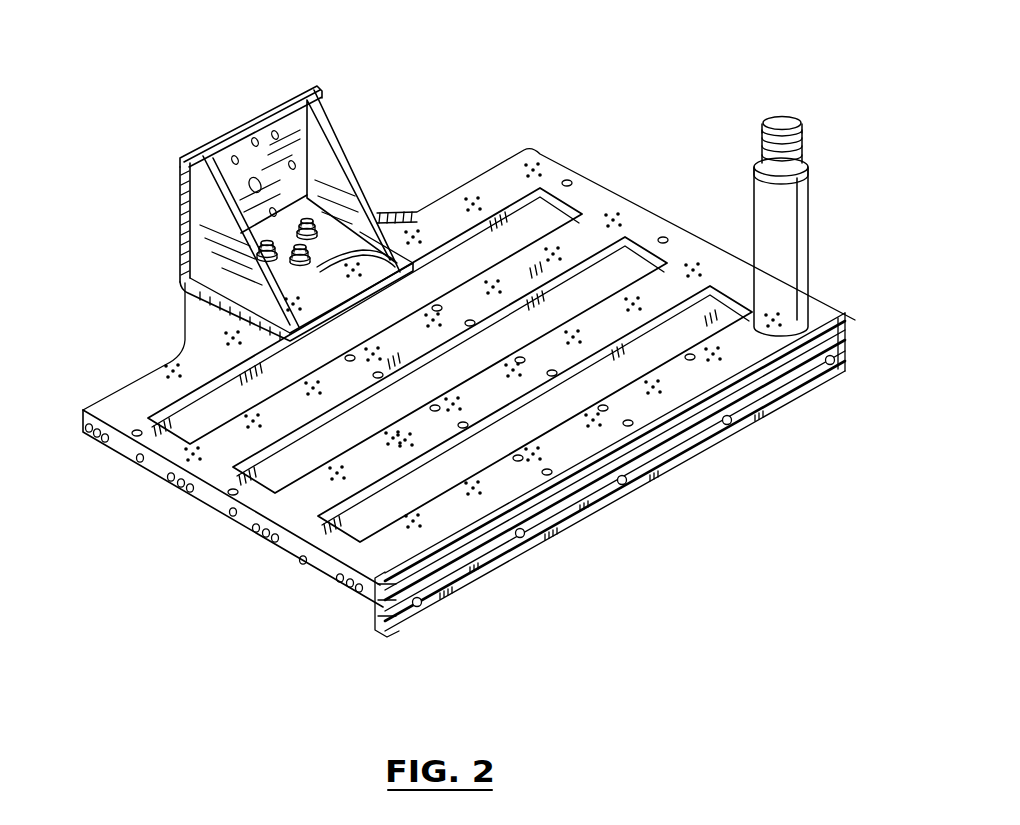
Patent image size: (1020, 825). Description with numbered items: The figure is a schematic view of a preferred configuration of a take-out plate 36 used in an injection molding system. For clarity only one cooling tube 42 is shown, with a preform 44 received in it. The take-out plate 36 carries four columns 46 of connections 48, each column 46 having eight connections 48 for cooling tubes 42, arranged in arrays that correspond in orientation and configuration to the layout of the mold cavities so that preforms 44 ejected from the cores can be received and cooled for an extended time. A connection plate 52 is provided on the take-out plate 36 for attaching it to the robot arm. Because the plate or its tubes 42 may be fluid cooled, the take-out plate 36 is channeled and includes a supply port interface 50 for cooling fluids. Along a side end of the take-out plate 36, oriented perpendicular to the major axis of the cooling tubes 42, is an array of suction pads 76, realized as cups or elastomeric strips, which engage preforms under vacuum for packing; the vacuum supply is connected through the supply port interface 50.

The take-out plate 36 is at (62, 148).
The cooling tube 42 is at (797, 220).
The preform 44 is at (783, 122).
The column 46 is at (503, 177).
The connection 48 is at (405, 440).
The supply port interface 50 is at (94, 452).
The connection plate 52 is at (232, 200).
The array of suction pads 76 is at (470, 567).